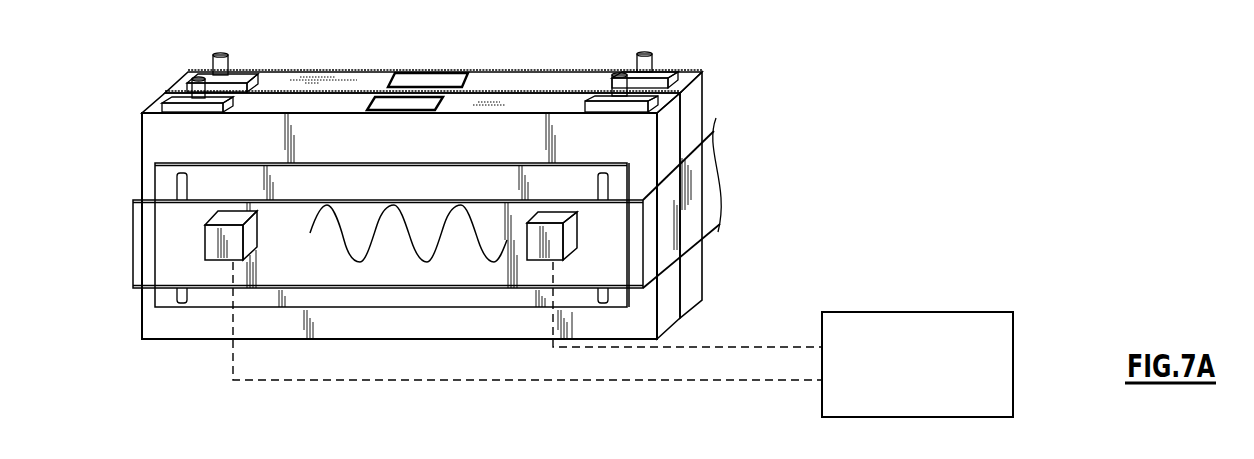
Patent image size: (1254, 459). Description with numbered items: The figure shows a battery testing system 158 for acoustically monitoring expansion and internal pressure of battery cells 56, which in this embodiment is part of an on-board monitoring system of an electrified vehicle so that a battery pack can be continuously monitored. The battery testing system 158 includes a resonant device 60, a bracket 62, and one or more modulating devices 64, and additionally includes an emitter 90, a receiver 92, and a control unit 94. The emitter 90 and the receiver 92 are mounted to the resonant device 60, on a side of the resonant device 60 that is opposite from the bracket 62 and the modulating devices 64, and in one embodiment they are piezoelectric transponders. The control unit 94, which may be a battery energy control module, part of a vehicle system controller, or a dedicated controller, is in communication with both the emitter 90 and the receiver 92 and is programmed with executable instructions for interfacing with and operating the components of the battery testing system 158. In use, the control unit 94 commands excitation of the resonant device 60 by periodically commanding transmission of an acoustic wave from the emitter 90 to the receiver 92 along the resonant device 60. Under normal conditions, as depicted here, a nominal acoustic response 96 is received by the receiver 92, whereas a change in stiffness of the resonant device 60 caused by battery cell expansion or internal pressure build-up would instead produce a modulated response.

The battery cell 56 is at (575, 102).
The resonant device 60 is at (370, 276).
The bracket 62 is at (432, 295).
The modulating device 64 is at (182, 313).
The emitter 90 is at (208, 253).
The receiver 92 is at (537, 250).
The control unit 94 is at (930, 312).
The nominal acoustic response 96 is at (414, 215).
The battery testing system 158 is at (379, 211).